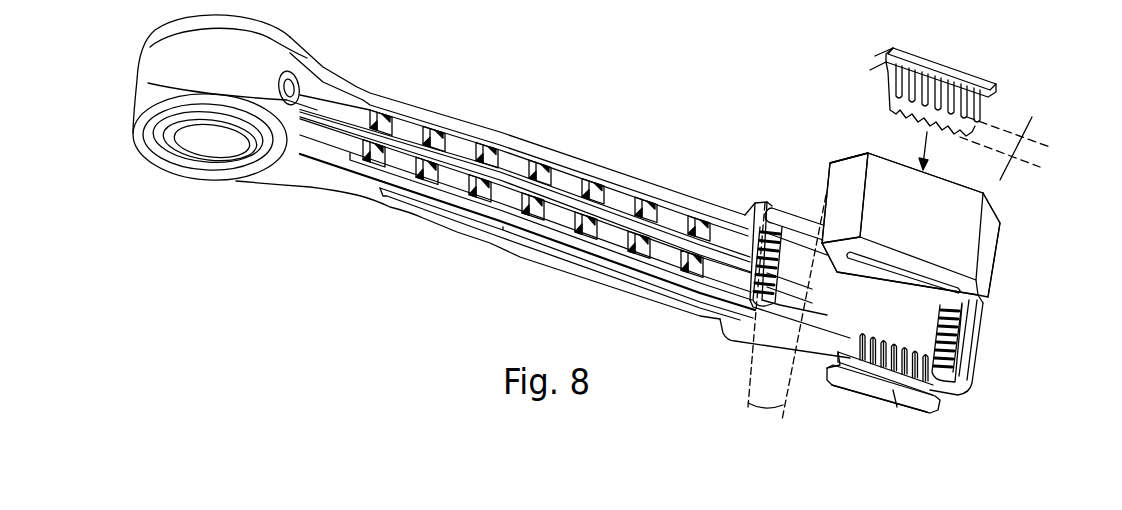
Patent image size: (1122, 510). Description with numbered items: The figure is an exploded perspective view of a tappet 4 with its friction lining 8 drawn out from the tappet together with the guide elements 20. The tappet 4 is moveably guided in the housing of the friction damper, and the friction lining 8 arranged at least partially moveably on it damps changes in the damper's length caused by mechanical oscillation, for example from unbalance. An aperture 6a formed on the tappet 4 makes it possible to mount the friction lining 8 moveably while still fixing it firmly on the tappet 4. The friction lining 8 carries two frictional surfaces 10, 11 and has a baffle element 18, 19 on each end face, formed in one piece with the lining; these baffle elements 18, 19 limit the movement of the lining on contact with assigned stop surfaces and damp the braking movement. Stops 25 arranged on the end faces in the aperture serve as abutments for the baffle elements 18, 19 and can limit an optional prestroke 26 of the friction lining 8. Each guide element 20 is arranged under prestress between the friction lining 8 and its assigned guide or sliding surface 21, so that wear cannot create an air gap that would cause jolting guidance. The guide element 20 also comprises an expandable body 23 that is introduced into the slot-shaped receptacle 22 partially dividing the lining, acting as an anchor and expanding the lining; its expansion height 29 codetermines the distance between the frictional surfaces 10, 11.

The tappet 4 is at (512, 108).
The aperture 6a is at (776, 158).
The friction lining 8 is at (824, 133).
The frictional surface 10 is at (960, 213).
The frictional surface 11 is at (1099, 6).
The baffle element 18 is at (990, 243).
The baffle element 19 is at (855, 173).
The guide element 20 is at (1003, 62).
The guide or sliding surface 21 is at (844, 319).
The receptacle 22 is at (985, 297).
The expandable body 23 is at (878, 95).
The stop 25 is at (903, 281).
The prestroke 26 is at (808, 413).
The expansion height 29 is at (1042, 157).